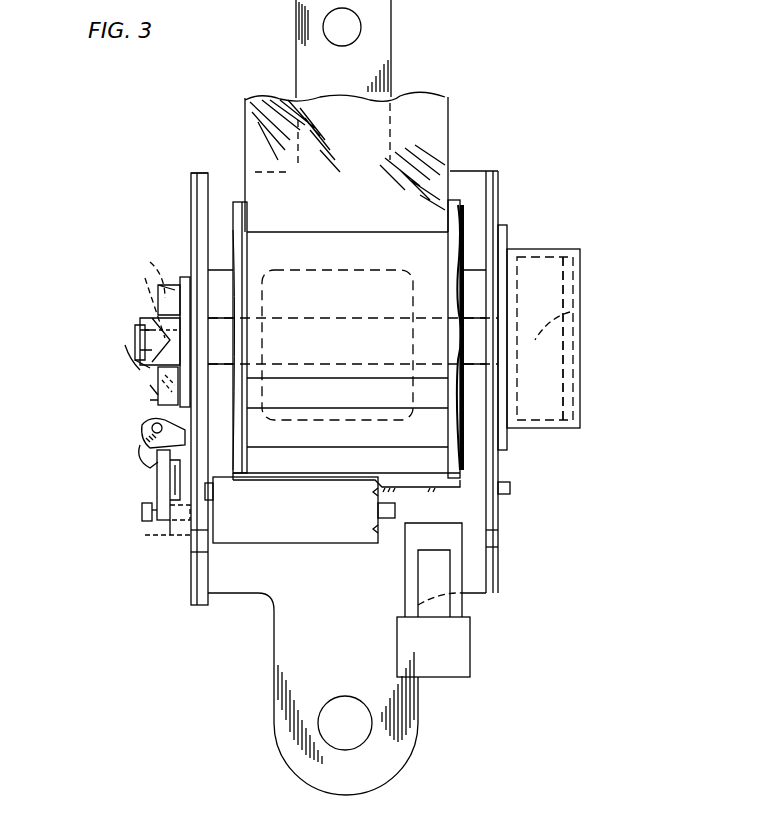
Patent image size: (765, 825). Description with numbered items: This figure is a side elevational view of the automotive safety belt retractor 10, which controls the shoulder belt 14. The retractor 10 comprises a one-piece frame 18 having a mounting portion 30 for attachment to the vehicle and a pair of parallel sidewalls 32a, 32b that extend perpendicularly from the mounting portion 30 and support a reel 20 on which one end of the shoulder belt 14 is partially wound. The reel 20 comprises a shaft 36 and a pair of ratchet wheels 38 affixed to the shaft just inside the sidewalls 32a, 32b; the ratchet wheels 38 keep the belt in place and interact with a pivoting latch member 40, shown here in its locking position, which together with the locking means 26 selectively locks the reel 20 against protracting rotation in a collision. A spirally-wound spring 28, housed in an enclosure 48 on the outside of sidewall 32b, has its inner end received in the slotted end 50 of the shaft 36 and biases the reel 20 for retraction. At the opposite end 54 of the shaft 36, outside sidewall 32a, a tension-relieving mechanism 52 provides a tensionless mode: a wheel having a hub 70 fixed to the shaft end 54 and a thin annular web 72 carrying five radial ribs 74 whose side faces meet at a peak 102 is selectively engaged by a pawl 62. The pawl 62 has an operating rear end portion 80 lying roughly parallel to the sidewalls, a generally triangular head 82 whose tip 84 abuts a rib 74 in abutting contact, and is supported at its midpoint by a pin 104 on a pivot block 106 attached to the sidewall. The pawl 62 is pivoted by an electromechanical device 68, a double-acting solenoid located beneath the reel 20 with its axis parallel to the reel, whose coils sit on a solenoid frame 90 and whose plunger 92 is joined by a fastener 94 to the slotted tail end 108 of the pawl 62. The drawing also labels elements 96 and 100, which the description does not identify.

The safety belt retractor 10 is at (522, 134).
The shoulder belt 14 is at (440, 115).
The frame 18 is at (437, 688).
The reel 20 is at (463, 230).
The locking means 26 is at (518, 487).
The spring 28 is at (570, 312).
The mounting portion 30 is at (392, 23).
The sidewall 32a is at (195, 590).
The sidewall 32b is at (500, 508).
The shaft 36 is at (350, 294).
The ratchet wheels 38 is at (463, 205).
The pivoting latch member 40 is at (452, 495).
The enclosure 48 is at (580, 395).
The slotted shaft end 50 is at (575, 278).
The tension-relieving mechanism 52 is at (140, 430).
The opposite end of reel shaft 54 is at (141, 299).
The pawl 62 is at (158, 386).
The electromechanical device 68 is at (270, 548).
The hub 70 is at (150, 345).
The annular web 72 is at (146, 270).
The ribs 74 is at (176, 285).
The operating rear end portion 80 is at (160, 493).
The triangular head 82 is at (148, 366).
The tip 84 is at (138, 352).
The solenoid frame 90 is at (338, 548).
The solenoid plunger 92 is at (185, 525).
The fastener 94 is at (142, 512).
The sensor 96 is at (472, 645).
The clutch teeth 100 is at (152, 312).
The peak 102 is at (140, 322).
The pin 104 is at (152, 405).
The pivot block 106 is at (148, 447).
The tail end 108 is at (165, 538).